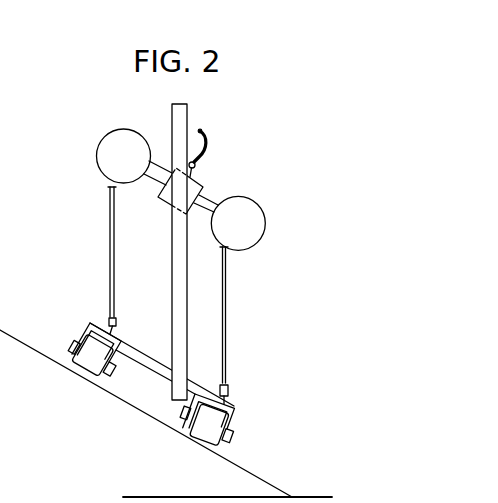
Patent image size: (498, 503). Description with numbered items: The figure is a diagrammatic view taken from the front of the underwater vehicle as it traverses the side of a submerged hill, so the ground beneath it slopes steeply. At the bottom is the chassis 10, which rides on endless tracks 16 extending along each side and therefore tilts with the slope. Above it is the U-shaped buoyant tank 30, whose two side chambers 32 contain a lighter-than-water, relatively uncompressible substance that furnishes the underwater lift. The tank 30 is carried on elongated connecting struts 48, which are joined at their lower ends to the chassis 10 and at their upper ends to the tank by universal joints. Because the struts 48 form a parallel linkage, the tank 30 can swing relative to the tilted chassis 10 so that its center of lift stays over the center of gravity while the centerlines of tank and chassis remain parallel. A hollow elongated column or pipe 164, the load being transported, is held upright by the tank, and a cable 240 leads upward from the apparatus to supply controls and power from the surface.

The chassis 10 is at (250, 407).
The endless tracks 16 is at (83, 372).
The buoyant tank 30 is at (210, 196).
The side chambers 32 is at (107, 152).
The connecting struts 48 is at (109, 280).
The column or pipe 164 is at (187, 120).
The cable 240 is at (211, 147).